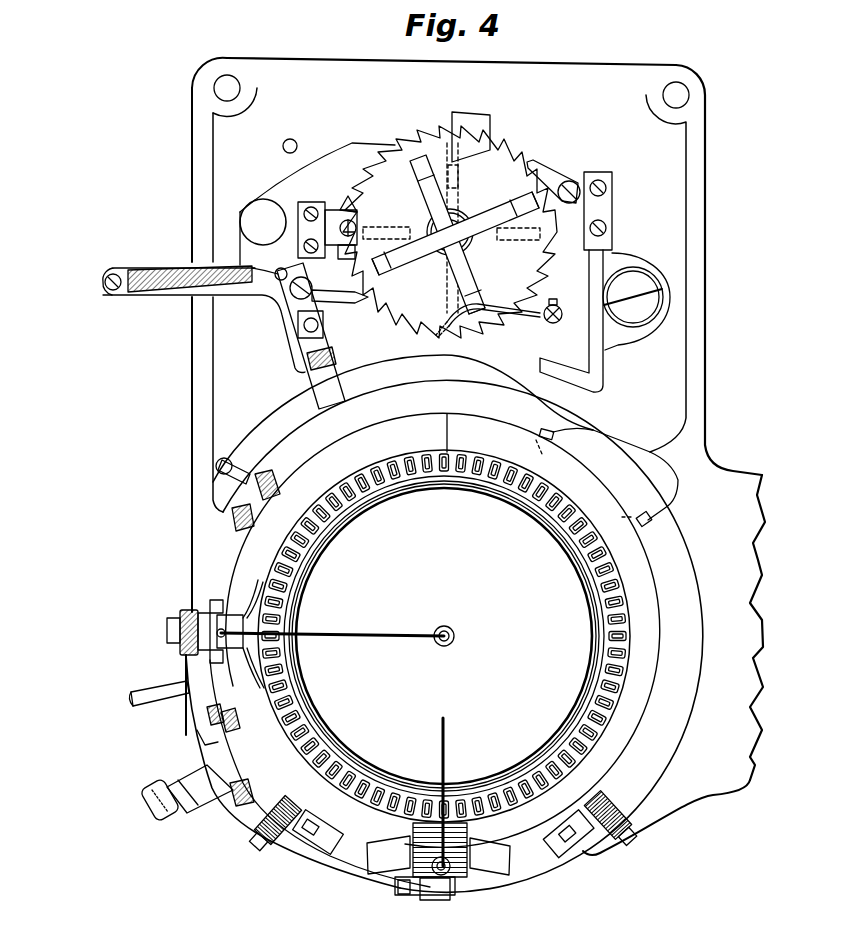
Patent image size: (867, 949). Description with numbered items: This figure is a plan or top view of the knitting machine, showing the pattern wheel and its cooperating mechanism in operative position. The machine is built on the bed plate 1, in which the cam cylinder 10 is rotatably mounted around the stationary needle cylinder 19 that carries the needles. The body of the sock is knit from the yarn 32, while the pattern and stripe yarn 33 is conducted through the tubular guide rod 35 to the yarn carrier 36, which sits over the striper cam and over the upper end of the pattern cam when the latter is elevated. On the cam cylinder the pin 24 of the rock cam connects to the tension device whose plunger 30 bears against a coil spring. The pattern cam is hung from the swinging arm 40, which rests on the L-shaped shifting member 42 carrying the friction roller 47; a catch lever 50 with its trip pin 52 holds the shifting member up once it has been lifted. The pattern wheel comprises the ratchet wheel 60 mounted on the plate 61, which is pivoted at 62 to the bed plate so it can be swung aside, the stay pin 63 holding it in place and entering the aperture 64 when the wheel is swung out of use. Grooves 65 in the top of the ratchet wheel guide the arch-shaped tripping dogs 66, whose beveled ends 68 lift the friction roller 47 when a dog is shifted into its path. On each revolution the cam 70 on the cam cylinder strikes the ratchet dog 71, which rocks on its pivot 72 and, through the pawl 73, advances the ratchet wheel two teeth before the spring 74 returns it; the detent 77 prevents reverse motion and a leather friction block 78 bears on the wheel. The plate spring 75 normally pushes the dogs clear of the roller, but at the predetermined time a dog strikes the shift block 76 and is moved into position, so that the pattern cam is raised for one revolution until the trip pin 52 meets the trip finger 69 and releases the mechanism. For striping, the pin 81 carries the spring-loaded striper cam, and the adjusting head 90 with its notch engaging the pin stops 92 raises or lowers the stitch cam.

The bed plate 1 is at (194, 413).
The cam cylinder 10 is at (700, 590).
The needle cylinder 19 is at (590, 662).
The pin 24 is at (419, 897).
The plunger 30 is at (395, 890).
The yarn 32 is at (448, 732).
The pattern and stripe yarn 33 is at (371, 636).
The tubular guide rod 35 is at (446, 632).
The yarn carrier 36 is at (266, 622).
The swinging arm 40 is at (257, 780).
The shifting member 42 is at (197, 807).
The friction roller 47 is at (153, 786).
The catch lever 50 is at (207, 715).
The trip pin 52 is at (132, 694).
The ratchet wheel 60 is at (503, 152).
The plate 61 is at (355, 150).
The pivot 62 is at (636, 278).
The stay pin 63 is at (260, 205).
The aperture 64 is at (296, 131).
The grooves 65 is at (548, 212).
The tripping dogs 66 is at (426, 191).
The beveled ends 68 is at (384, 278).
The trip finger 69 is at (560, 344).
The cam 70 is at (618, 442).
The ratchet dog 71 is at (318, 385).
The pivot 72 is at (298, 333).
The pawl 73 is at (364, 302).
The spring 74 is at (163, 288).
The plate spring 75 is at (513, 322).
The shift block 76 is at (480, 126).
The detent 77 is at (567, 178).
The friction block 78 is at (340, 205).
The pin 81 is at (183, 614).
The adjusting head 90 is at (257, 497).
The pin stops 92 is at (237, 512).